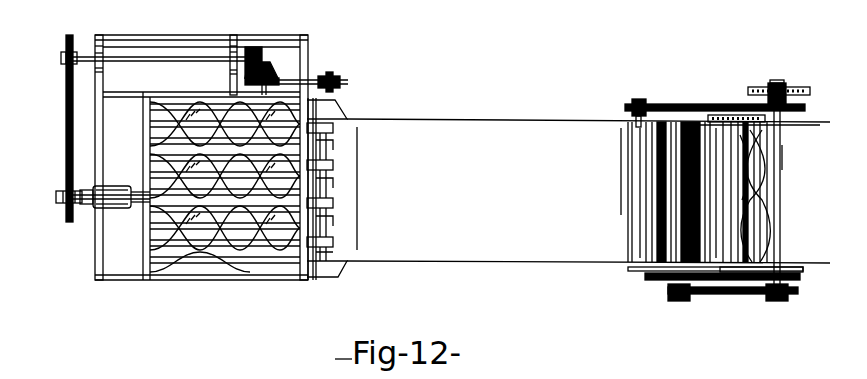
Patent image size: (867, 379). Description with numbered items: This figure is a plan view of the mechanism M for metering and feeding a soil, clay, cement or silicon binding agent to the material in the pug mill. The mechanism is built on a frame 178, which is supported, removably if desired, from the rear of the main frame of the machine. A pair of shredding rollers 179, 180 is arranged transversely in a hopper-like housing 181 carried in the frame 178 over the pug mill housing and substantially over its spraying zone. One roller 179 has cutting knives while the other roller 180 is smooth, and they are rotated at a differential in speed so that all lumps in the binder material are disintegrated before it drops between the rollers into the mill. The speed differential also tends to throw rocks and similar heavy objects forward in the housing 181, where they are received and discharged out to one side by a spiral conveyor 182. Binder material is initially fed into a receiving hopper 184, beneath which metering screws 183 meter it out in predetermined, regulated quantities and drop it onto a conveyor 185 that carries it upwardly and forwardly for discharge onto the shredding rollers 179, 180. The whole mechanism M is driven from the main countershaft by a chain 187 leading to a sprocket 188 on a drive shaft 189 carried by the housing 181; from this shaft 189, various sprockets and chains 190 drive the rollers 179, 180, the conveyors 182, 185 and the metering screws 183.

The frame 178 is at (306, 55).
The shredding roller 179 is at (684, 90).
The shredding roller 180 is at (733, 89).
The hopper-like housing 181 is at (814, 248).
The spiral conveyor 182 is at (766, 190).
The metering screws 183 is at (333, 133).
The receiving hopper 184 is at (150, 280).
The conveyor 185 is at (498, 263).
The chain 187 is at (820, 62).
The sprocket 188 is at (741, 62).
The drive shaft 189 is at (781, 155).
The sprockets and chains 190 is at (64, 113).
The mechanism M is at (685, 302).